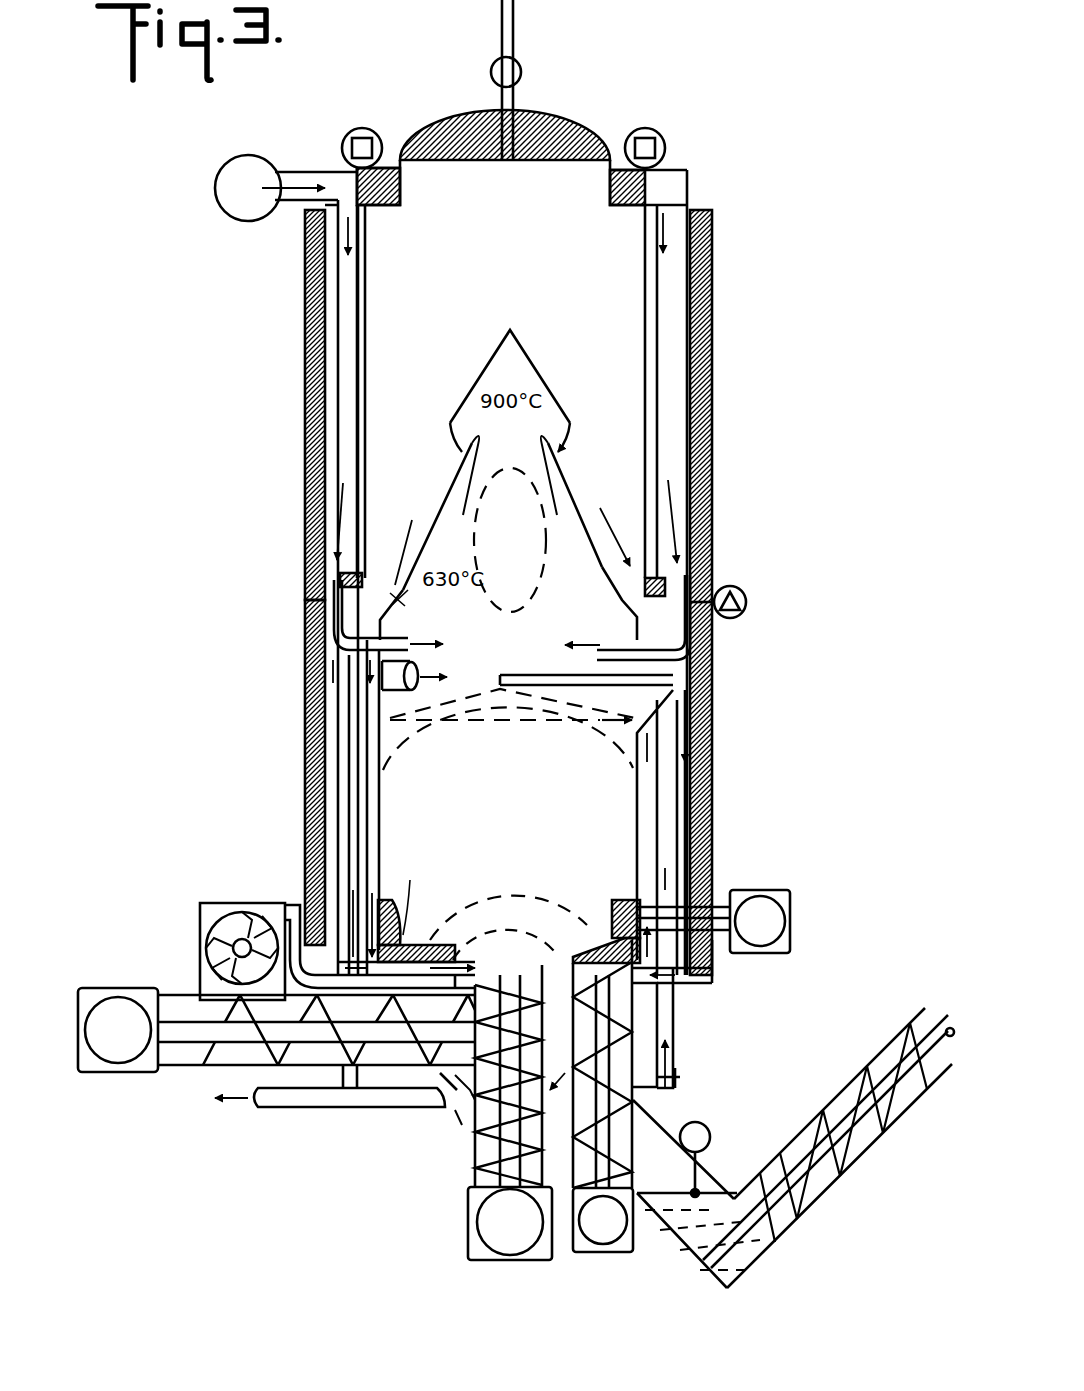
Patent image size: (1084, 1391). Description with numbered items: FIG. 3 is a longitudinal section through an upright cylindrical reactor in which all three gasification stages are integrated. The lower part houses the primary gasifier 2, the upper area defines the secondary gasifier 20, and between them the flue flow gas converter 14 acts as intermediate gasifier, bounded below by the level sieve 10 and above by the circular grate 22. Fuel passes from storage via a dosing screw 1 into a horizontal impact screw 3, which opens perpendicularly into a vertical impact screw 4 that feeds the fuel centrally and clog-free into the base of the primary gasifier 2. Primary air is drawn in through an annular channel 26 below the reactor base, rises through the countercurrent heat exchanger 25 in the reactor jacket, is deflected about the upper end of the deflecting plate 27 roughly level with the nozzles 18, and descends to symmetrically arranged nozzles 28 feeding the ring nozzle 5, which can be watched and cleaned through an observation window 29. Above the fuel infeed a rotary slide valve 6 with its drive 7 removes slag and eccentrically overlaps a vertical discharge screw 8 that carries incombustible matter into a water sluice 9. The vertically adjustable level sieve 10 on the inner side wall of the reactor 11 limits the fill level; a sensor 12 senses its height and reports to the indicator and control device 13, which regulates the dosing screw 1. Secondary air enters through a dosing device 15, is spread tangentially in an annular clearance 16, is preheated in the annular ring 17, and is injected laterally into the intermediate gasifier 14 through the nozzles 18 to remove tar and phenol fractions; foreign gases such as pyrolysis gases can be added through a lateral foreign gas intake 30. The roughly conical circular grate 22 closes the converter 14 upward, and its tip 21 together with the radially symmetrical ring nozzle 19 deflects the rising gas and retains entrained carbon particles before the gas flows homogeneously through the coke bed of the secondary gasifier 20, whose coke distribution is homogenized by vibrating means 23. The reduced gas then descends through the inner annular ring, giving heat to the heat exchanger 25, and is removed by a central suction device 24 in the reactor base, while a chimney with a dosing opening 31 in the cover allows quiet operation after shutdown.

The dosing screw 1 is at (240, 935).
The primary gasifier 2 is at (505, 792).
The horizontal impact screw 3 is at (230, 1050).
The vertical impact screw 4 is at (485, 1168).
The ring nozzle 5 is at (458, 1082).
The rotary slide valve 6 is at (403, 930).
The drive 7 is at (792, 908).
The discharge screw 8 is at (610, 1020).
The water sluice 9 is at (815, 1205).
The level sieve 10 is at (568, 700).
The inner side wall of the reactor 11 is at (690, 672).
The sensor 12 is at (668, 632).
The indicator and control device 13 is at (748, 602).
The flue flow gas converter 14 is at (526, 592).
The dosing device 15 is at (222, 170).
The annular clearance 16 is at (352, 238).
The annular ring 17 is at (340, 431).
The nozzles 18 is at (330, 628).
The ring nozzle 19 is at (655, 427).
The secondary gasifier 20 is at (387, 336).
The tip 21 is at (490, 362).
The circular grate 22 is at (420, 606).
The vibrating means 23 is at (350, 132).
The central suction device 24 is at (455, 1130).
The countercurrent heat exchanger 25 is at (372, 835).
The annular channel 26 is at (680, 1077).
The deflecting plate 27 is at (340, 720).
The nozzles 28 is at (677, 985).
The observation window 29 is at (298, 935).
The foreign gas intake 30 is at (425, 668).
The dosing opening 31 is at (492, 66).